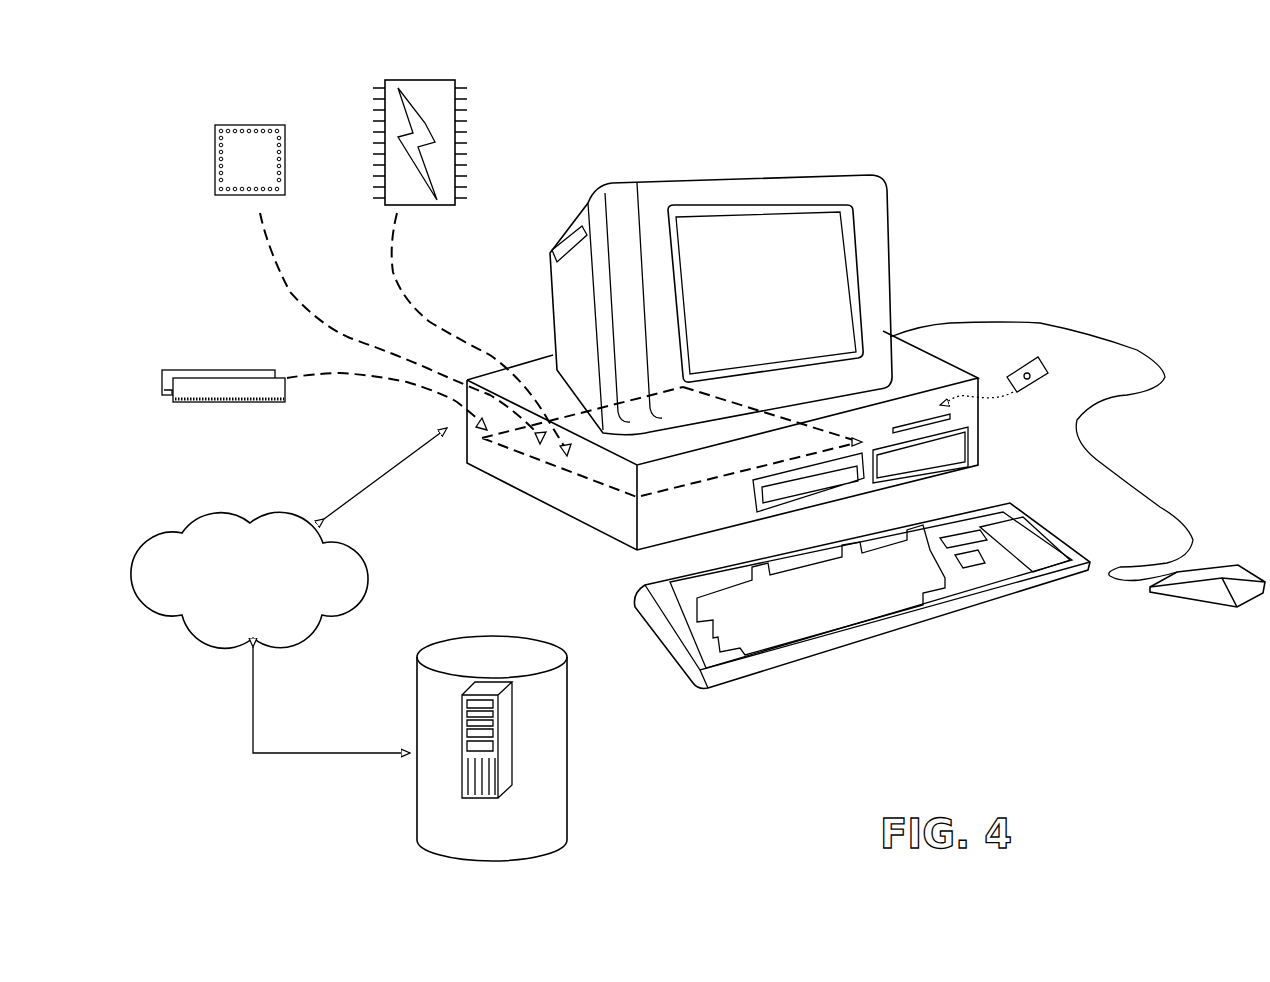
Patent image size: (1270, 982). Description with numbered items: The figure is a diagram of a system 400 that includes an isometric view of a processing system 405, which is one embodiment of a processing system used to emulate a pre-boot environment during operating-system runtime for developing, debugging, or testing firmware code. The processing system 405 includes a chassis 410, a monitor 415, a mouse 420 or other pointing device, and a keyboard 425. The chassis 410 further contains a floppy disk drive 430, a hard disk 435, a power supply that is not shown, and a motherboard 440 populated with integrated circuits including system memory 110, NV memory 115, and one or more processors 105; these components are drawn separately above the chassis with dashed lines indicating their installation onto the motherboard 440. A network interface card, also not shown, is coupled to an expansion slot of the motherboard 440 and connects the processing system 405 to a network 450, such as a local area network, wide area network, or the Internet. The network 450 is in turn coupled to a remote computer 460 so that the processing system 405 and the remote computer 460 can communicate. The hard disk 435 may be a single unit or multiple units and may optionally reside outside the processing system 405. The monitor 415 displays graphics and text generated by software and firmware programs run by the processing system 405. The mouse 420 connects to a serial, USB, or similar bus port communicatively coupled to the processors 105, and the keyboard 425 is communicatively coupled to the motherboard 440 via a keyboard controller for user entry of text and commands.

The processor 105 is at (287, 134).
The system memory 110 is at (188, 370).
The NV memory 115 is at (437, 80).
The system 400 is at (1066, 695).
The processing system 405 is at (1066, 94).
The chassis 410 is at (927, 353).
The monitor 415 is at (876, 215).
The mouse 420 is at (1203, 595).
The keyboard 425 is at (962, 613).
The floppy disk drive 430 is at (950, 416).
The hard disk 435 is at (983, 450).
The motherboard 440 is at (550, 467).
The network 450 is at (263, 513).
The remote computer 460 is at (570, 787).